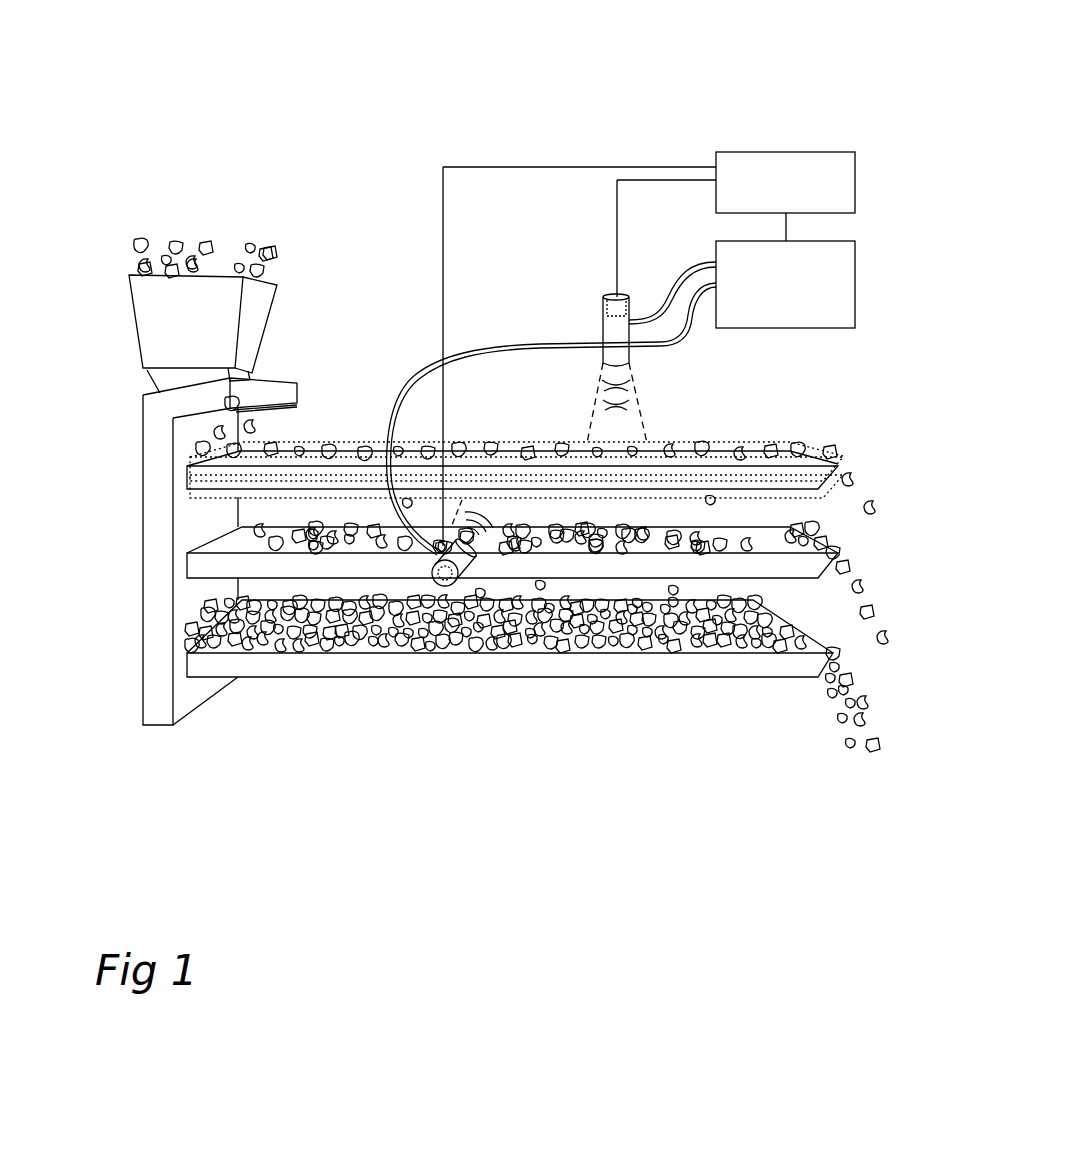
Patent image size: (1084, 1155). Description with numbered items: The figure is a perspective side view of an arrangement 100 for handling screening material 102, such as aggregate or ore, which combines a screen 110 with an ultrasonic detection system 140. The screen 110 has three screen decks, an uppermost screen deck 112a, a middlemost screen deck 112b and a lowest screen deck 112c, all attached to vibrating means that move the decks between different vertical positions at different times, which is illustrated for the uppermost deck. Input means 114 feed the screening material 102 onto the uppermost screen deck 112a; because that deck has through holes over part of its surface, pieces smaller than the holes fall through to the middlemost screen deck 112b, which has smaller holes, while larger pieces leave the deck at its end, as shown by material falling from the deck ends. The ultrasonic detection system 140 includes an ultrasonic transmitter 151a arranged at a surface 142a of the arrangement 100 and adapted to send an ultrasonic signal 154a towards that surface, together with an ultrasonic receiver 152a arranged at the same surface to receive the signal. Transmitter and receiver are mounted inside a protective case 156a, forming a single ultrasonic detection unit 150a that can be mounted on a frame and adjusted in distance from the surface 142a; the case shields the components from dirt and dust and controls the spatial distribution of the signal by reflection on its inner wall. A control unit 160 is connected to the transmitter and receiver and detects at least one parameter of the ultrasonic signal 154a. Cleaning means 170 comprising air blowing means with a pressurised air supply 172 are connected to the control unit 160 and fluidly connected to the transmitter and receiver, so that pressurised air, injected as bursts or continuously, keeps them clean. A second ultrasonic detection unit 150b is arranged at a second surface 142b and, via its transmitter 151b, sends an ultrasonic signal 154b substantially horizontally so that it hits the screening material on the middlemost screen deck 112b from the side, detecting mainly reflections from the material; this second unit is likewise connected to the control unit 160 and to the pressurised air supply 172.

The arrangement 100 is at (262, 82).
The screening material 102 is at (183, 219).
The screen 110 is at (128, 425).
The uppermost screen deck 112a is at (858, 436).
The middlemost screen deck 112b is at (858, 539).
The screen deck 112c is at (858, 634).
The input means 114 is at (257, 335).
The ultrasonic detection system 140 is at (576, 95).
The surface 142a is at (616, 432).
The second surface 142b is at (484, 531).
The ultrasonic detection unit 150a is at (606, 280).
The second ultrasonic detection unit 150b is at (442, 590).
The ultrasonic transmitter 151a is at (603, 303).
The second nozzle outlet 151b is at (436, 570).
The ultrasonic receiver 152a is at (603, 318).
The ultrasonic signal 154a is at (633, 386).
The ultrasonic signal 154b is at (497, 506).
The protective case 156a is at (600, 340).
The control unit 160 is at (785, 182).
The cleaning means 170 is at (679, 248).
The pressurized air supply 172 is at (785, 284).